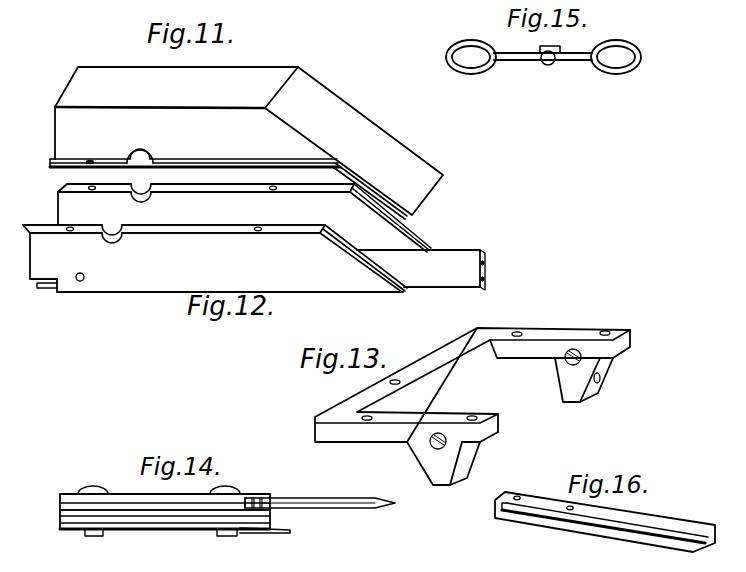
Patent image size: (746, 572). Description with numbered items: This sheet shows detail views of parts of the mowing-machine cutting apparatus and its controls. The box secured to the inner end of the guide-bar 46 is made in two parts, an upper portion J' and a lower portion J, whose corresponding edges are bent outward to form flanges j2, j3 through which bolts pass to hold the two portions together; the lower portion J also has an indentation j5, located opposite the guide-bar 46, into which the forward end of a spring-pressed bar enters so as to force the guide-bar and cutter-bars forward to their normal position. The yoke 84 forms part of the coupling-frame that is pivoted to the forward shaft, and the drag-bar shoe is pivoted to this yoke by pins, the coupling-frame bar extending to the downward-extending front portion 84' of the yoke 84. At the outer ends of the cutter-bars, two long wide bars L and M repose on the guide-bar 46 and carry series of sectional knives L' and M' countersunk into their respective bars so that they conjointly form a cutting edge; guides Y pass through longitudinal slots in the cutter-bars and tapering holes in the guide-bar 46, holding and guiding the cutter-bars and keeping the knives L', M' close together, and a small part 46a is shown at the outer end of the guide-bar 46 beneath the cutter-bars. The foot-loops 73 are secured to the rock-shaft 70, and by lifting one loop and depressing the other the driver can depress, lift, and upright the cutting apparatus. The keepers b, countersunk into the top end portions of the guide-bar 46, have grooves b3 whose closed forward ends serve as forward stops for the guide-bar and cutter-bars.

In FIG. 11, the upper portion of the box J' is at (249, 141).
In FIG. 11, the flange j2 is at (177, 157).
In FIG. 12, the flange j3 is at (221, 184).
In FIG. 12, the lower portion of the box J is at (215, 258).
In FIG. 12, the indentation j5 is at (78, 281).
In FIG. 12, the guide-bar 46 is at (421, 270).
In FIG. 14, the guide-bar 46 is at (173, 518).
In FIG. 15, the rock-shaft 70 is at (547, 63).
In FIG. 15, the loops 73 is at (593, 62).
In FIG. 13, the yoke 84 is at (472, 385).
In FIG. 13, the downward-extending front portion of the yoke 84' is at (510, 417).
In FIG. 14, the guides Y is at (98, 482).
In FIG. 14, the cutter-bar M is at (165, 501).
In FIG. 14, the cutter-bar L is at (165, 493).
In FIG. 14, the sectional knives L' is at (320, 491).
In FIG. 14, the sectional knives M' is at (294, 515).
In FIG. 14, the foot 46a is at (283, 532).
In FIG. 16, the keepers b is at (518, 520).
In FIG. 16, the grooves b3 is at (567, 522).